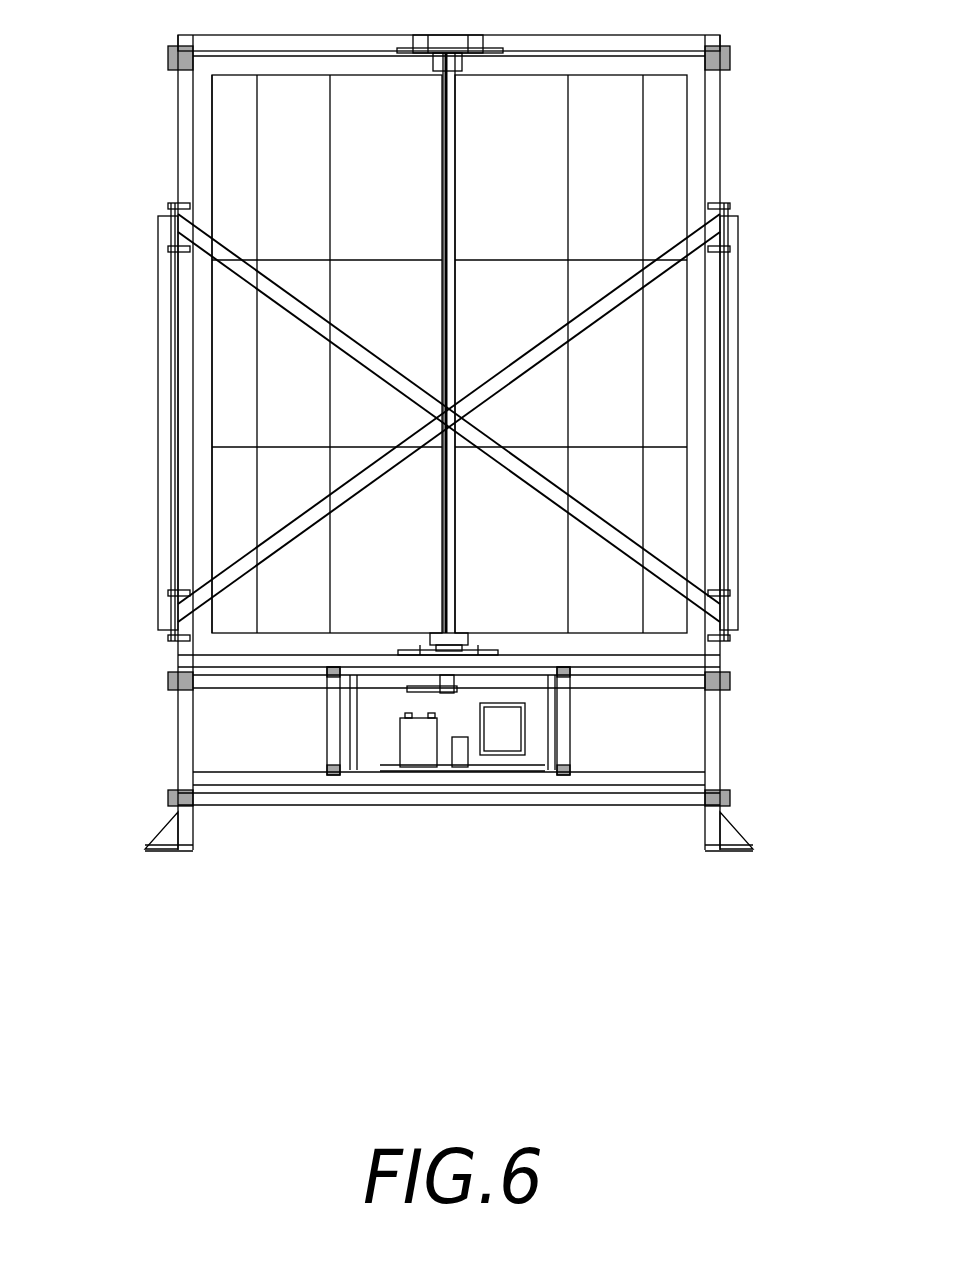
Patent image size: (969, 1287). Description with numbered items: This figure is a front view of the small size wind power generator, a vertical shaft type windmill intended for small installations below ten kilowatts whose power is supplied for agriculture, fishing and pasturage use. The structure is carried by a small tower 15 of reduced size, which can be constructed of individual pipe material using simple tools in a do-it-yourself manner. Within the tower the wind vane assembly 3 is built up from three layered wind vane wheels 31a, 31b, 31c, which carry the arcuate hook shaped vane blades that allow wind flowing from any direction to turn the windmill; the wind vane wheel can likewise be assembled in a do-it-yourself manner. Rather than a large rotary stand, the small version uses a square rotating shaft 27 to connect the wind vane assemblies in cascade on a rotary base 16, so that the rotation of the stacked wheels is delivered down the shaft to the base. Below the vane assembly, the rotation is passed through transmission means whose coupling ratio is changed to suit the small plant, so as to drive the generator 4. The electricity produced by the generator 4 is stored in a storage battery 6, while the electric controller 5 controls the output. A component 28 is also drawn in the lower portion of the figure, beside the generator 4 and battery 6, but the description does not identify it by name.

The small tower 15 is at (715, 88).
The wind vane assembly 3 is at (653, 165).
The wind vane wheel 31a is at (225, 505).
The wind vane wheel 31b is at (230, 365).
The wind vane wheel 31c is at (245, 160).
The square rotating shaft 27 is at (452, 497).
The rotary base 16 is at (468, 635).
The bar 28 is at (438, 700).
The storage battery 6 is at (412, 748).
The electric controller 5 is at (463, 750).
The generator 4 is at (517, 745).